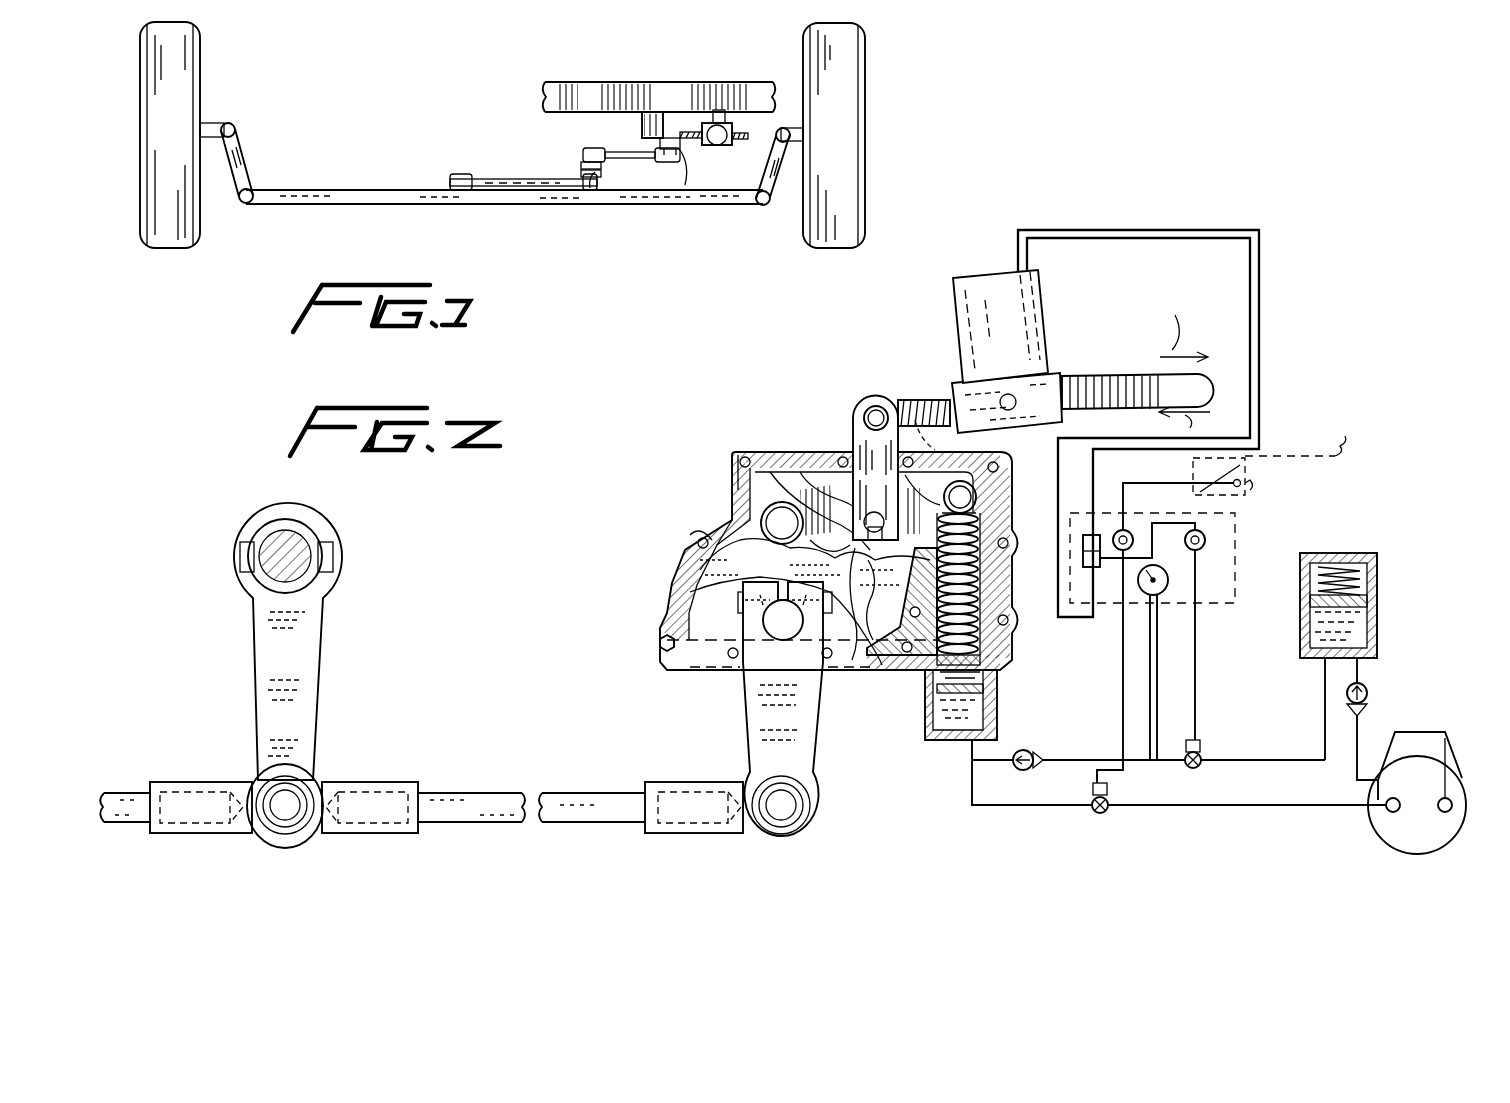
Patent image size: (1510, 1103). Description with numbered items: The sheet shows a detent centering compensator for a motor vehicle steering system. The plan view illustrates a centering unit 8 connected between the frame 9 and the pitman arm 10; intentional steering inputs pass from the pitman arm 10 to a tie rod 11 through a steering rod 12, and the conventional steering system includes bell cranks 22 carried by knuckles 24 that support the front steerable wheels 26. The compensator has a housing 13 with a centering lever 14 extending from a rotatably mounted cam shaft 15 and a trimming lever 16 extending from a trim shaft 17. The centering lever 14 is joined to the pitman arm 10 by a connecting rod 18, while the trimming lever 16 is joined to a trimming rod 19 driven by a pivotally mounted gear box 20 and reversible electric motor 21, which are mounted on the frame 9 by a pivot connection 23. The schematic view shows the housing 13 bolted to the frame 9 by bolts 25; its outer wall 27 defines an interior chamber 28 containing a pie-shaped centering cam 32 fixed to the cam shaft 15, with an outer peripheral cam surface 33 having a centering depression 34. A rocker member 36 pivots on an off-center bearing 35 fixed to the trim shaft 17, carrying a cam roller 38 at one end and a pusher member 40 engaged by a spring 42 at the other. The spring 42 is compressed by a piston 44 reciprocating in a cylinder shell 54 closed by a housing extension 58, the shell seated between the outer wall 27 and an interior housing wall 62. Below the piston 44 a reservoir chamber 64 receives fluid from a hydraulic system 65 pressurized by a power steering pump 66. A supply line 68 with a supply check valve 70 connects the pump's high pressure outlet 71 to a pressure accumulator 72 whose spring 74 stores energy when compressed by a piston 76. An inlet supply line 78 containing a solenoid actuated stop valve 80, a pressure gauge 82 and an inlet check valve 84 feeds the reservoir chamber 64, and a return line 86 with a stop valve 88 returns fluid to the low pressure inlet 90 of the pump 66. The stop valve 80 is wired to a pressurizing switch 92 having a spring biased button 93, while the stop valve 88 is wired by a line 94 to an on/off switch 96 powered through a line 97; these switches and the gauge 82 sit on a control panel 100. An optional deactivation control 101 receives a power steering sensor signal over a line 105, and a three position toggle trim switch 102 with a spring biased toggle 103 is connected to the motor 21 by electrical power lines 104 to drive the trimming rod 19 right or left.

In FIG. 1, the centering unit 8 is at (626, 131).
In FIG. 2, the centering unit 8 is at (614, 565).
In FIG. 1, the frame 9 is at (651, 82).
In FIG. 1, the pitman arm 10 is at (588, 172).
In FIG. 2, the pitman arm 10 is at (315, 672).
In FIG. 1, the tie rod 11 is at (366, 190).
In FIG. 1, the steering rod 12 is at (478, 178).
In FIG. 2, the housing 13 is at (753, 442).
In FIG. 1, the centering lever 14 is at (686, 170).
In FIG. 2, the centering lever 14 is at (740, 745).
In FIG. 2, the cam shaft 15 is at (775, 625).
In FIG. 1, the trimming lever 16 is at (676, 150).
In FIG. 2, the trimming lever 16 is at (855, 430).
In FIG. 2, the trim shaft 17 is at (835, 510).
In FIG. 1, the connecting rod 18 is at (597, 170).
In FIG. 2, the connecting rod 18 is at (460, 793).
In FIG. 1, the trimming rod 19 is at (748, 136).
In FIG. 2, the trimming rod 19 is at (905, 400).
In FIG. 1, the gear box 20 is at (708, 123).
In FIG. 2, the gear box 20 is at (1065, 375).
In FIG. 2, the reversible electric motor 21 is at (1045, 292).
In FIG. 1, the bell cranks 22 is at (248, 178).
In FIG. 1, the pivot connection 23 is at (743, 122).
In FIG. 2, the pivot connection 23 is at (1006, 382).
In FIG. 1, the knuckles 24 is at (225, 126).
In FIG. 2, the bolts 25 is at (658, 650).
In FIG. 1, the front steerable wheels 26 is at (252, 40).
In FIG. 2, the outer wall 27 is at (732, 488).
In FIG. 2, the interior chamber 28 is at (860, 640).
In FIG. 2, the centering cam 32 is at (873, 640).
In FIG. 2, the outer peripheral cam surface 33 is at (887, 665).
In FIG. 2, the centering depression 34 is at (698, 535).
In FIG. 2, the off-center bearing 35 is at (922, 400).
In FIG. 2, the rocker member 36 is at (797, 500).
In FIG. 2, the cam roller 38 is at (740, 475).
In FIG. 2, the pusher member 40 is at (996, 465).
In FIG. 2, the spring 42 is at (1000, 583).
In FIG. 2, the piston 44 is at (1005, 650).
In FIG. 2, the cylinder shell 54 is at (1012, 552).
In FIG. 2, the housing extension 58 is at (925, 740).
In FIG. 2, the interior housing wall 62 is at (915, 552).
In FIG. 2, the reservoir chamber 64 is at (970, 718).
In FIG. 2, the hydraulic system 65 is at (1410, 658).
In FIG. 2, the power steering pump 66 is at (1385, 805).
In FIG. 2, the supply line 68 is at (1362, 752).
In FIG. 2, the supply check valve 70 is at (1350, 690).
In FIG. 2, the high pressure outlet 71 is at (1447, 795).
In FIG. 2, the pressure accumulator 72 is at (1340, 553).
In FIG. 2, the spring 74 is at (1368, 545).
In FIG. 2, the piston 76 is at (1368, 600).
In FIG. 2, the inlet supply line 78 is at (1322, 748).
In FIG. 2, the solenoid actuated stop valve 80 is at (1200, 740).
In FIG. 2, the pressure gauge 82 is at (1160, 595).
In FIG. 2, the inlet check valve 84 is at (1030, 752).
In FIG. 2, the return line 86 is at (1132, 808).
In FIG. 2, the solenoid actuated stop valve 88 is at (1097, 812).
In FIG. 2, the low pressure inlet 90 is at (1202, 642).
In FIG. 2, the pressurizing switch 92 is at (1205, 553).
In FIG. 2, the spring biased button 93 is at (1206, 540).
In FIG. 2, the line 94 is at (1123, 695).
In FIG. 2, the on/off switch 96 is at (1133, 535).
In FIG. 2, the line 97 is at (1122, 492).
In FIG. 2, the control panel 100 is at (1238, 512).
In FIG. 2, the deactivation control 101 is at (1220, 468).
In FIG. 2, the three position toggle trim switch 102 is at (1098, 568).
In FIG. 2, the toggle 103 is at (1085, 535).
In FIG. 2, the electrical power lines 104 is at (1258, 282).
In FIG. 2, the line 105 is at (1345, 445).